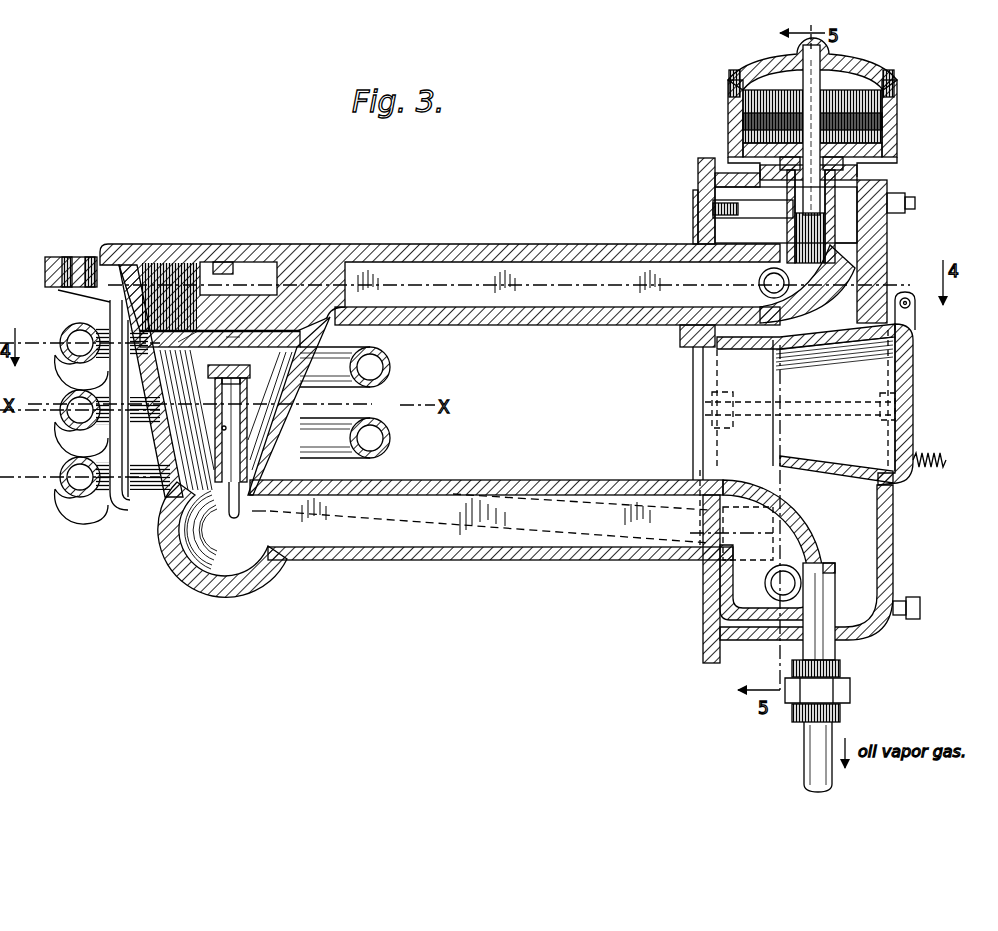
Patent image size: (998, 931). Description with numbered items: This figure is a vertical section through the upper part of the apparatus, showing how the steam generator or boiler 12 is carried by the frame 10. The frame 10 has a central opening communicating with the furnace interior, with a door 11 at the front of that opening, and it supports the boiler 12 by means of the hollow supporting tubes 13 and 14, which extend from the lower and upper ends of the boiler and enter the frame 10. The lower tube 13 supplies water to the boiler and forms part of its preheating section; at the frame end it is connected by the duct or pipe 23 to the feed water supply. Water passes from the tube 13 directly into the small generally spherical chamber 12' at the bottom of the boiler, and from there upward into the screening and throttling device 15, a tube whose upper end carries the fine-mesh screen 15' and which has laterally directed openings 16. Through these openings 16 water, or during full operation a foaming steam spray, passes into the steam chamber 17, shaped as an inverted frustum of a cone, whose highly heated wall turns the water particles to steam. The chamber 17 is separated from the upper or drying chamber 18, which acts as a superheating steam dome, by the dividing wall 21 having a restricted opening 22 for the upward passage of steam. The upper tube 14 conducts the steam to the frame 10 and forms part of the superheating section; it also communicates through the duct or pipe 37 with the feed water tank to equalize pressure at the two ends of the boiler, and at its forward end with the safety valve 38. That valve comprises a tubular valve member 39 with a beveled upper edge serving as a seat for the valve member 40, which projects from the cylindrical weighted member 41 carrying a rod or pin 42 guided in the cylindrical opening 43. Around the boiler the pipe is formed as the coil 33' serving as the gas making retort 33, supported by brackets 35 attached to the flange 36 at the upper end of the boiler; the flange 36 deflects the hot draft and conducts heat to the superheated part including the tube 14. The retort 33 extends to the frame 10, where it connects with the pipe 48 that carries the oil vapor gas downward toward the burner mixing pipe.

The frame 10 is at (692, 177).
The door 11 is at (914, 378).
The steam generator or boiler 12 is at (231, 424).
The spherical chamber 12' is at (222, 555).
The lower supporting member or tube 13 is at (507, 487).
The upper supporting member or tube 14 is at (468, 254).
The screening and throttling device 15 is at (238, 363).
The screen 15' is at (254, 345).
The laterally directed openings 16 is at (226, 427).
The steam chamber 17 is at (345, 348).
The upper or drying chamber 18 is at (272, 296).
The dividing wall 21 is at (177, 341).
The restricted opening 22 is at (230, 337).
The duct or pipe 23 is at (768, 579).
The gas making retort 33 is at (133, 433).
The coil 33' is at (80, 410).
The brackets 35 is at (300, 457).
The flange 36 is at (60, 258).
The duct or pipe 37 is at (758, 280).
The safety valve 38 is at (718, 80).
The valve member 39 is at (838, 196).
The valve member 40 is at (812, 116).
The cylindrical weighted member 41 is at (895, 118).
The rod or pin 42 is at (800, 98).
The cylindrical opening 43 is at (830, 67).
The pipe 48 is at (813, 754).